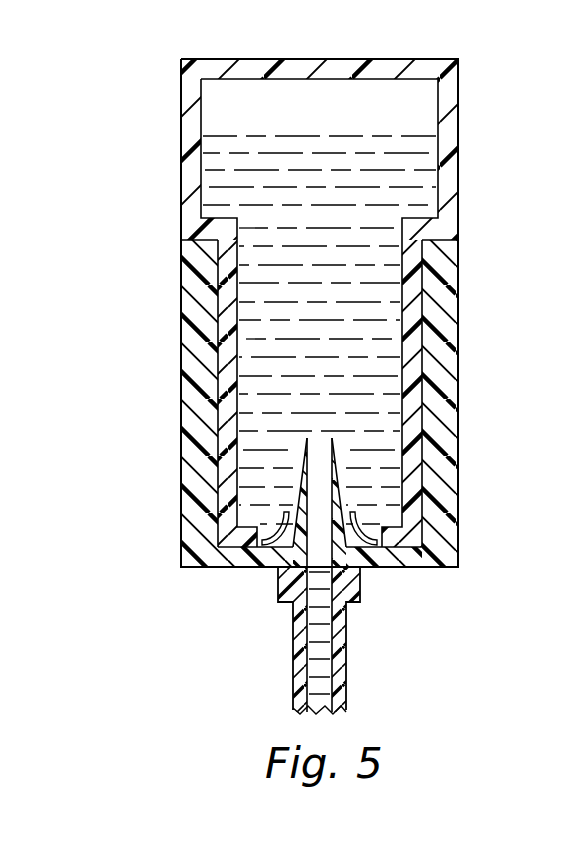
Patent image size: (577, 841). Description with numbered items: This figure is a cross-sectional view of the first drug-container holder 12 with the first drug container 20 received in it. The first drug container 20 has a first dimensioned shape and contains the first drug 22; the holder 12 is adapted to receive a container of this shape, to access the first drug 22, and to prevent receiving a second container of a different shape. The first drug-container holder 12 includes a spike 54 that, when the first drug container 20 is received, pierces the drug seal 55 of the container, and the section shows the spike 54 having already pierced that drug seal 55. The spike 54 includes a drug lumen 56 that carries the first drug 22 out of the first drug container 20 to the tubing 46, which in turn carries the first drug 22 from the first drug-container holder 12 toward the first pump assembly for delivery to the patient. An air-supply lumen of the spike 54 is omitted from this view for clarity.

The first drug container 20 is at (181, 96).
The first drug 22 is at (332, 163).
The first drug-container holder 12 is at (182, 396).
The spike 54 is at (355, 463).
The drug lumen 56 is at (318, 486).
The drug seal 55 is at (279, 543).
The tubing 46 is at (347, 650).